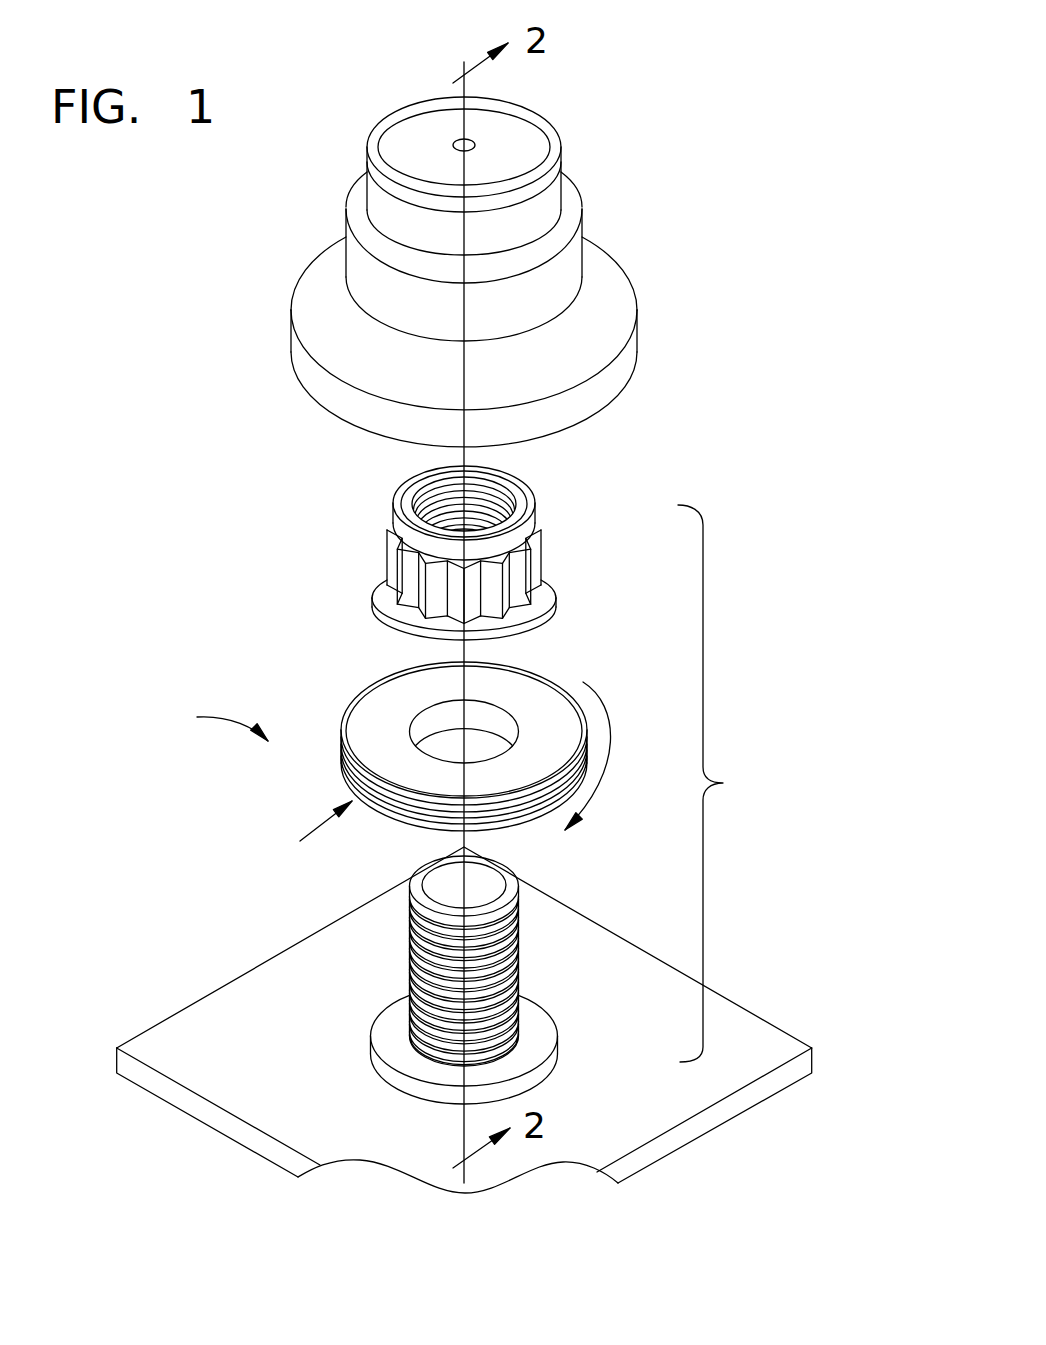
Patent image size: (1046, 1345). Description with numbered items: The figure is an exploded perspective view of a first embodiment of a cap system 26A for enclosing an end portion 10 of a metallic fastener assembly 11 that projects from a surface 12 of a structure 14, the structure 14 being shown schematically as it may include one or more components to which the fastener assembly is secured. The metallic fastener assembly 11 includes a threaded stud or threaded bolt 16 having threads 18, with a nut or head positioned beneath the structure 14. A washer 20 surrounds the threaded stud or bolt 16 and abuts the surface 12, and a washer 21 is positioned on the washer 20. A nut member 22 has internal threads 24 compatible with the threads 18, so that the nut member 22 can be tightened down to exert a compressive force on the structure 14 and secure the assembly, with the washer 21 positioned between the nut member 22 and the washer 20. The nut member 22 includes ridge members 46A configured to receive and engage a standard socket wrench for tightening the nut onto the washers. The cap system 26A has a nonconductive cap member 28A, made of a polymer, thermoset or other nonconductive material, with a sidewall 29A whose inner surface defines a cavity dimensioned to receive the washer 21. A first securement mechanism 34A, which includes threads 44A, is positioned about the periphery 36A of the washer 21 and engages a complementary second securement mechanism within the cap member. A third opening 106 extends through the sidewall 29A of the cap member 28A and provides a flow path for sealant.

The end portion 10 is at (723, 783).
The metallic fastener assembly 11 is at (213, 722).
The surface 12 is at (496, 1020).
The structure 14 is at (785, 1070).
The threaded stud or threaded bolt 16 is at (469, 980).
The threads 18 is at (423, 1008).
The washer 20 is at (398, 1055).
The washer 21 is at (432, 775).
The nut member 22 is at (445, 542).
The threads 24 is at (478, 503).
The cap system 26A is at (562, 263).
The cap member 28A is at (600, 291).
The sidewall 29A is at (613, 362).
The first securement mechanism 34A is at (298, 827).
The periphery 36A is at (610, 724).
The threads 44A is at (430, 822).
The ridge members 46A is at (422, 588).
The third opening 106 is at (473, 143).